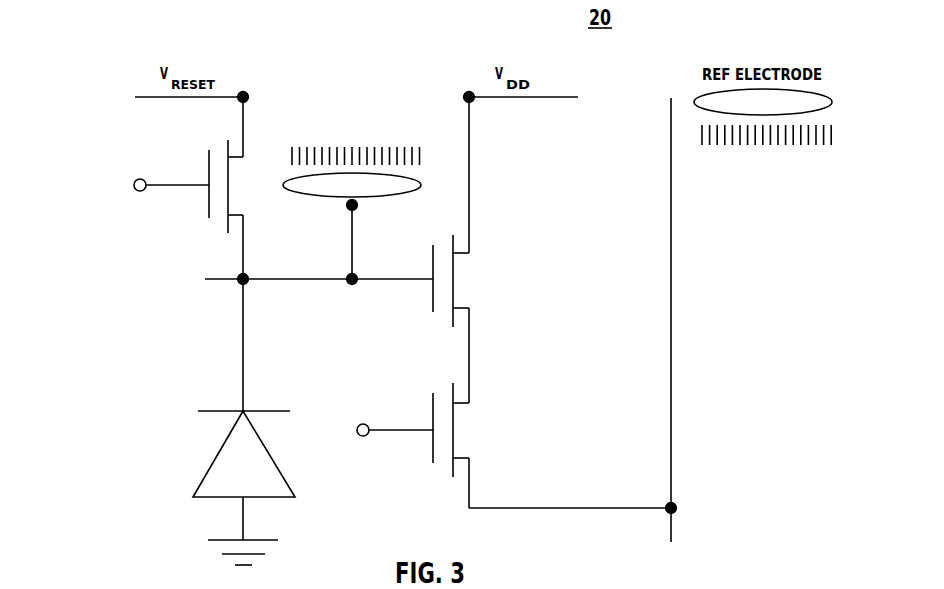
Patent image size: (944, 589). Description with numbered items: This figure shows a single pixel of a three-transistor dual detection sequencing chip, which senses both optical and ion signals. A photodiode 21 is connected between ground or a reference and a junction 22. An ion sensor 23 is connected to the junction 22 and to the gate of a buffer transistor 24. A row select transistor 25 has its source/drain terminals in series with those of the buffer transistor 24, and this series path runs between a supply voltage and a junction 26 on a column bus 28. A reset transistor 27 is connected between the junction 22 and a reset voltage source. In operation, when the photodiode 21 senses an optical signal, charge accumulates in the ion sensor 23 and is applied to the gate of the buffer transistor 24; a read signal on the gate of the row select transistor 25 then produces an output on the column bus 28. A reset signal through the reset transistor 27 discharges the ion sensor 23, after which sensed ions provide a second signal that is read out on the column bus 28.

The photodiode 21 is at (212, 464).
The junction 22 is at (205, 281).
The ion sensor 23 is at (390, 85).
The buffer transistor 24 is at (463, 269).
The row select transistor 25 is at (440, 469).
The junction 26 is at (678, 508).
The reset transistor 27 is at (193, 200).
The column bus 28 is at (672, 322).